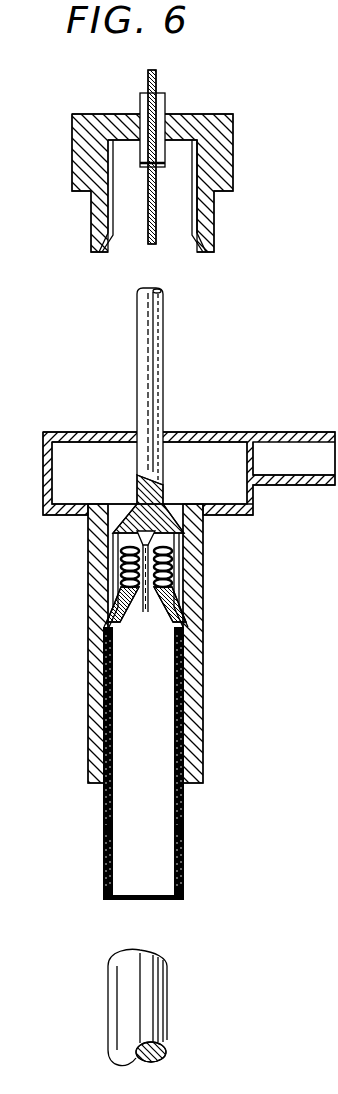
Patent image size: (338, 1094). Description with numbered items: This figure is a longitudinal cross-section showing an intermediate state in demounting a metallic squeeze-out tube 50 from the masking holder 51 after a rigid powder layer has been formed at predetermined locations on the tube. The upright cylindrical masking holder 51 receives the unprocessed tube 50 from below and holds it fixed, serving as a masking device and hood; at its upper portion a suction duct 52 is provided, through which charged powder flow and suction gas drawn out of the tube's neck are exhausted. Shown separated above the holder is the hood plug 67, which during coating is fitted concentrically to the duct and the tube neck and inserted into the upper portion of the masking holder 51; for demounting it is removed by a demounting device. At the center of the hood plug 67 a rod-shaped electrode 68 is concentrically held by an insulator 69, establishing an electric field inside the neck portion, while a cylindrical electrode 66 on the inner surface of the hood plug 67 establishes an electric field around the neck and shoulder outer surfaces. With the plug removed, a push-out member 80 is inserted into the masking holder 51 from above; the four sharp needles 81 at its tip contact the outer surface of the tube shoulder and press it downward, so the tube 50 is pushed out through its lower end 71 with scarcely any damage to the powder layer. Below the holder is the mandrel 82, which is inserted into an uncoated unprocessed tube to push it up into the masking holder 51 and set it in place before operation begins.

The unprocessed tube 50 is at (104, 803).
The masking holder 51 is at (193, 650).
The suction duct 52 is at (283, 432).
The cylindrical electrode 66 is at (107, 203).
The hood plug 67 is at (212, 120).
The rod-shaped electrode 68 is at (150, 222).
The insulator 69 is at (161, 99).
The open lower end of tube 71 is at (104, 843).
The push-out member 80 is at (155, 378).
The sharp needles 81 is at (124, 555).
The mandrel 82 is at (118, 1004).